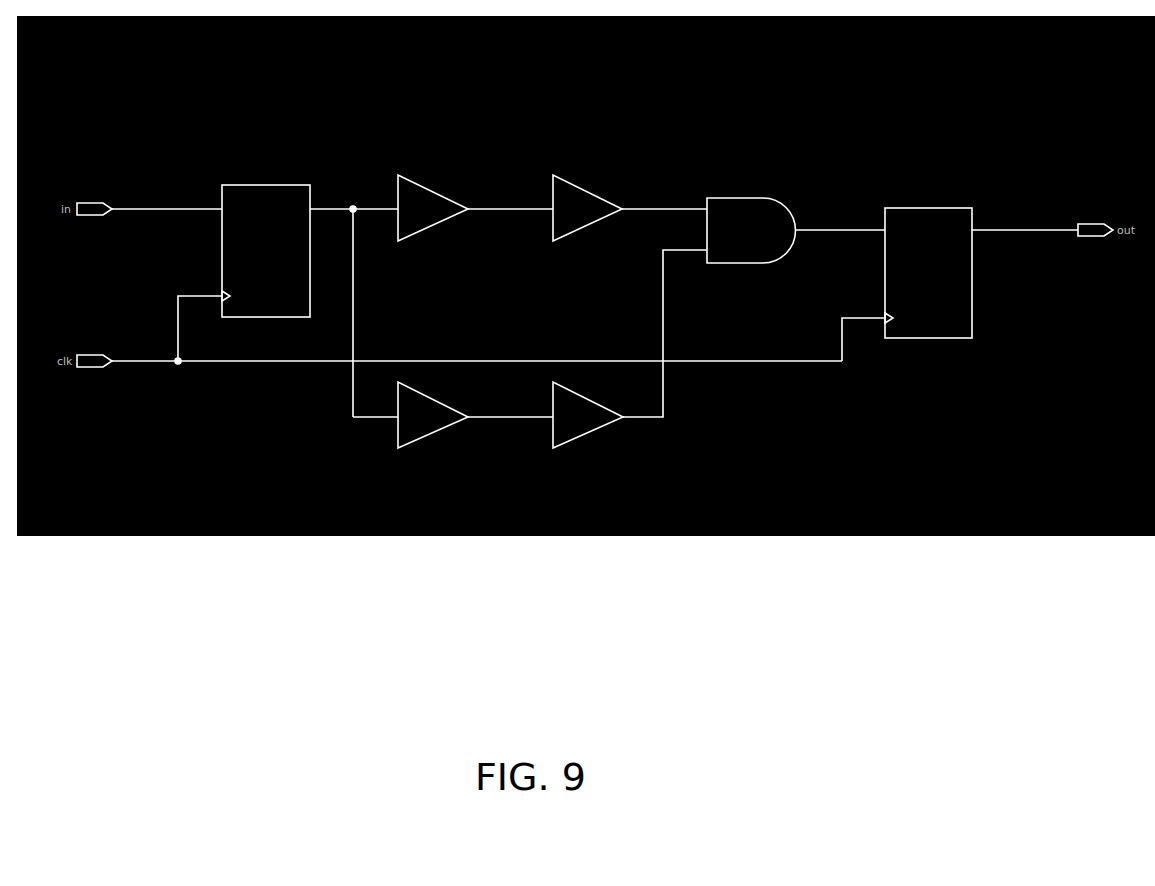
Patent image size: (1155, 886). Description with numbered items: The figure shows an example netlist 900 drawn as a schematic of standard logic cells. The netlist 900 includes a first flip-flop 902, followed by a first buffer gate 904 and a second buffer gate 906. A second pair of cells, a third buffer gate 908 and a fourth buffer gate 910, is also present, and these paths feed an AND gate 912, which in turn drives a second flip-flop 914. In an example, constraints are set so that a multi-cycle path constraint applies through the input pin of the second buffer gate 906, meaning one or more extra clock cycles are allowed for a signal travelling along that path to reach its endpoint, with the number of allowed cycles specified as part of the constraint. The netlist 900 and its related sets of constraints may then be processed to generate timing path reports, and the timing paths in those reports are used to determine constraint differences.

The netlist 900 is at (919, 109).
The flip-flop 902 is at (262, 183).
The buffer gate 904 is at (411, 177).
The buffer gate 906 is at (580, 182).
The buffer gate 908 is at (408, 445).
The buffer gate 910 is at (558, 445).
The AND gate 912 is at (758, 197).
The flip-flop 914 is at (925, 339).